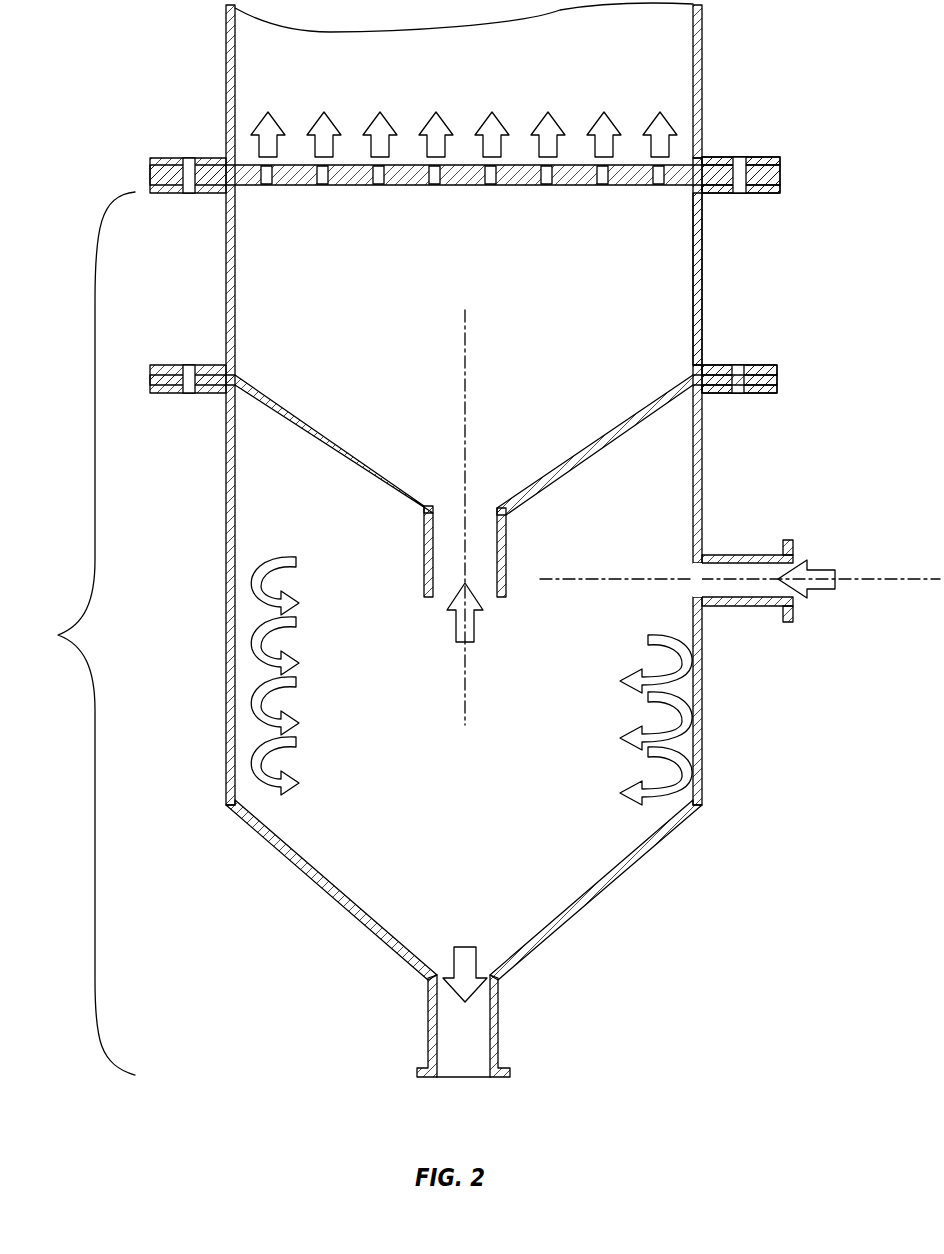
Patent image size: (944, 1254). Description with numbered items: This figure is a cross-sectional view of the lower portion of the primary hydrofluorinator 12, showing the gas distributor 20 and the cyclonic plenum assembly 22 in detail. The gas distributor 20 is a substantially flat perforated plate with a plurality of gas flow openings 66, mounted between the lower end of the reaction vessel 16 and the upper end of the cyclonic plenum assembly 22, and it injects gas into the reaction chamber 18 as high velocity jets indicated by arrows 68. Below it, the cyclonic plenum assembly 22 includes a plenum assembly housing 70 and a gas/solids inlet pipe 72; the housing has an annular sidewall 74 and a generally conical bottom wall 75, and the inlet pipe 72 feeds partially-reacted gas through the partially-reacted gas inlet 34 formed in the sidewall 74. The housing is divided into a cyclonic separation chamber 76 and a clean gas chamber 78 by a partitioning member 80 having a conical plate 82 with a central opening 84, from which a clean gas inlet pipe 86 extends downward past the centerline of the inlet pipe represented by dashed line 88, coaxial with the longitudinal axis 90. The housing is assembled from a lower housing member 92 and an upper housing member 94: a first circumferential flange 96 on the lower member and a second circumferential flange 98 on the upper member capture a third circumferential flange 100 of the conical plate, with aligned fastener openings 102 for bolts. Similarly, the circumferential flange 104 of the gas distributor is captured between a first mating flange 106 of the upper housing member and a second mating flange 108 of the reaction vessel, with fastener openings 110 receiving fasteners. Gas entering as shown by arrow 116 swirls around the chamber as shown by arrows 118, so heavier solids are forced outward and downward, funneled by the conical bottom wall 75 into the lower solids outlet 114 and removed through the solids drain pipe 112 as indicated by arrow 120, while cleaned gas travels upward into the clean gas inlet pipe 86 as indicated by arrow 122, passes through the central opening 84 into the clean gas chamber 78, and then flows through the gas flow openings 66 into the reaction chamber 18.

The primary hydrofluorinator 12 is at (148, 40).
The reaction vessel 16 is at (710, 34).
The reaction chamber 18 is at (470, 57).
The gas distributor 20 is at (632, 188).
The cyclonic plenum assembly 22 is at (76, 633).
The partially-reacted gas inlet 34 is at (700, 560).
The gas flow openings 66 is at (659, 186).
The arrows 68 is at (657, 128).
The plenum assembly housing 70 is at (712, 305).
The gas/solids inlet pipe 72 is at (745, 555).
The annular sidewall 74 is at (703, 478).
The conical bottom wall 75 is at (337, 892).
The cyclonic separation chamber 76 is at (395, 695).
The clean gas chamber 78 is at (396, 352).
The partitioning member 80 is at (298, 410).
The conical plate 82 is at (532, 455).
The central opening 84 is at (436, 529).
The clean gas inlet pipe 86 is at (424, 560).
The dashed line 88 is at (598, 578).
The longitudinal axis 90 is at (468, 352).
The lower housing member 92 is at (703, 722).
The upper housing member 94 is at (703, 272).
The first circumferential flange 96 is at (762, 394).
The second circumferential flange 98 is at (758, 364).
The third circumferential flange 100 is at (778, 380).
The fastener openings 102 is at (735, 364).
The circumferential flange 104 is at (781, 172).
The first mating flange 106 is at (762, 194).
The second mating flange 108 is at (760, 157).
The fastener openings 110 is at (738, 157).
The solids drain pipe 112 is at (500, 1025).
The lower solids outlet 114 is at (427, 993).
The arrow 116 is at (820, 566).
The arrows 118 is at (282, 556).
The arrow 120 is at (460, 950).
The arrow 122 is at (483, 625).